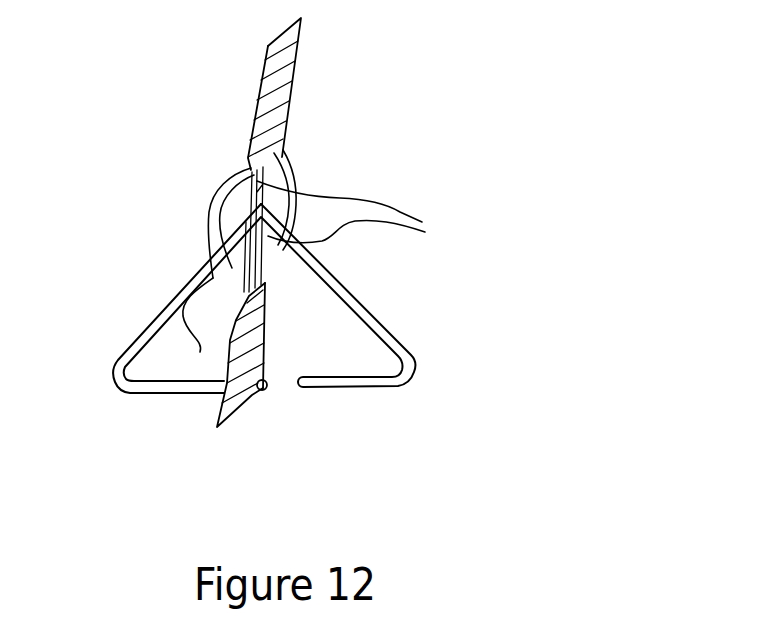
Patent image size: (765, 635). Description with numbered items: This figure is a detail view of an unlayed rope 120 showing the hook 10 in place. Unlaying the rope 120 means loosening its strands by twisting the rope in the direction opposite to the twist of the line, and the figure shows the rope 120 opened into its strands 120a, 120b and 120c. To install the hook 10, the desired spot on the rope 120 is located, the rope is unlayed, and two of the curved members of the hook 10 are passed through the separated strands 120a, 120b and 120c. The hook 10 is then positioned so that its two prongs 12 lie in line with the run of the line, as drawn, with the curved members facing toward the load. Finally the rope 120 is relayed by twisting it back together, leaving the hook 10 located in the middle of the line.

The hook 10 is at (137, 296).
The prongs 12 is at (360, 214).
The rope 120 is at (250, 108).
The strand 120a is at (210, 210).
The strand 120b is at (307, 171).
The strand 120c is at (200, 352).